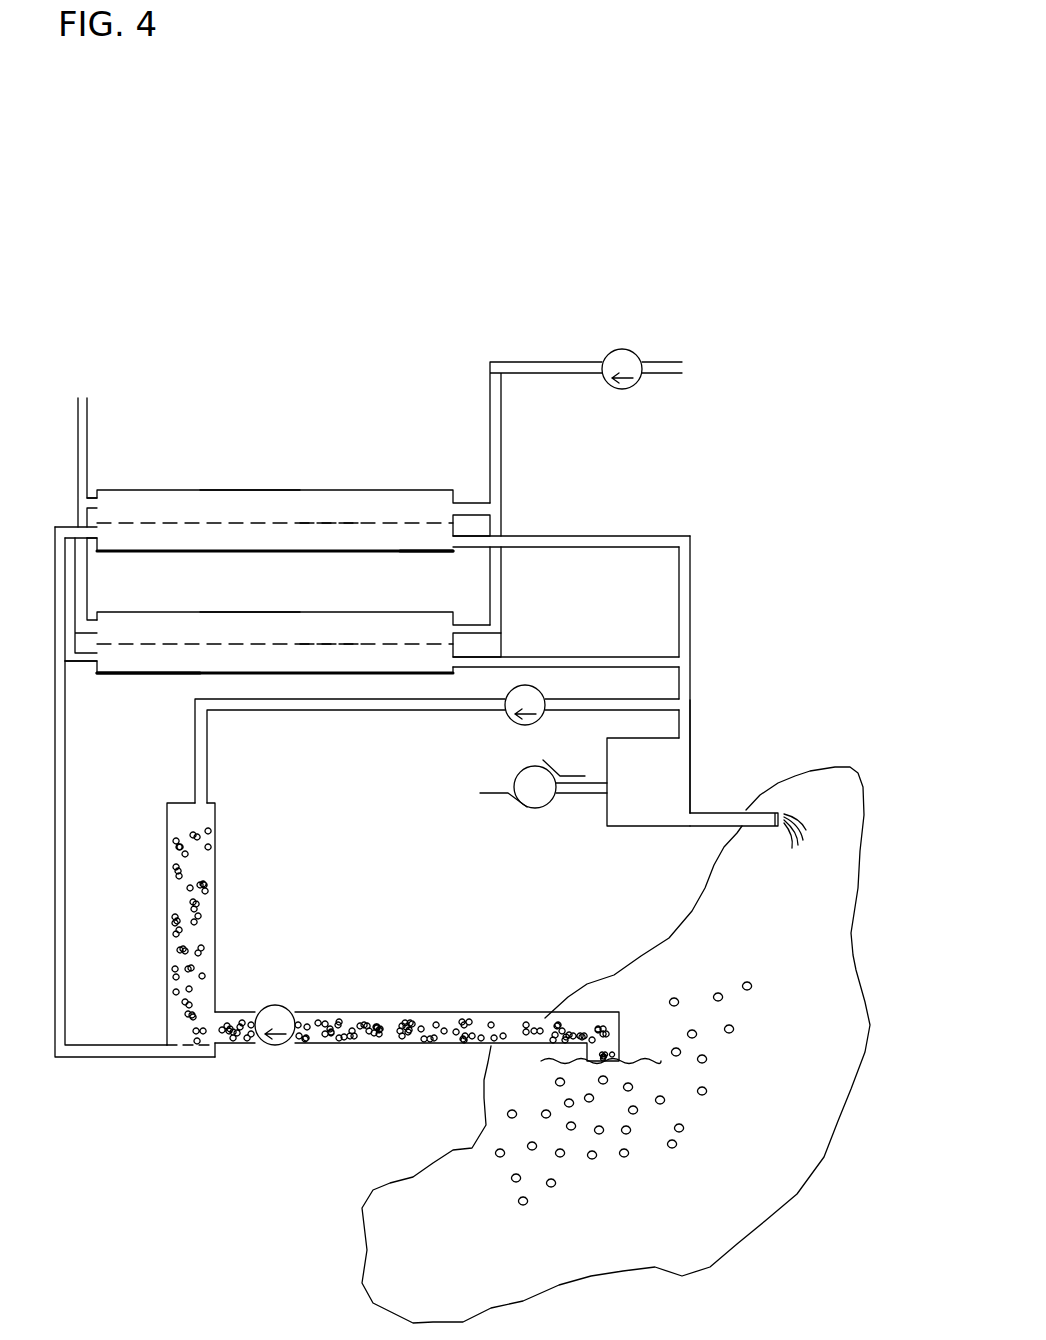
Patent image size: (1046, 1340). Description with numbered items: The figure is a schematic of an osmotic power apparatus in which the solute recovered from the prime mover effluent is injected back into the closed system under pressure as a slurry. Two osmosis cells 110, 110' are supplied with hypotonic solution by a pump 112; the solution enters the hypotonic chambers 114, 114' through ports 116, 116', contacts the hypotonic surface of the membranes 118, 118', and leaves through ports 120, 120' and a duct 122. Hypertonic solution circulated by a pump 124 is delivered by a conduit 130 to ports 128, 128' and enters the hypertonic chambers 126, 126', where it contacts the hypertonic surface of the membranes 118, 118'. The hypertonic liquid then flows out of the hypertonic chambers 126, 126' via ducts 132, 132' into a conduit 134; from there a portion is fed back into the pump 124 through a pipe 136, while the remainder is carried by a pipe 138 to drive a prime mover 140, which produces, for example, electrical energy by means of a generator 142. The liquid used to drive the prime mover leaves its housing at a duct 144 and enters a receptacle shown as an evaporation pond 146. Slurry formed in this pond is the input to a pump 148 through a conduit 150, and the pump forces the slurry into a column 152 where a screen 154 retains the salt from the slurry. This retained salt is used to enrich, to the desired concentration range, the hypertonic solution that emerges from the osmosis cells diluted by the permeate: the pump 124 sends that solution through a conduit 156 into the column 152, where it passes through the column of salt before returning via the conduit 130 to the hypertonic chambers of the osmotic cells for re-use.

The osmosis cell 110 is at (288, 499).
The osmosis cell 110' is at (277, 625).
The pump 112 is at (633, 350).
The hypotonic chamber 114 is at (268, 479).
The hypotonic chamber 114' is at (270, 603).
The port 116 is at (454, 493).
The port 116' is at (529, 637).
The membrane 118 is at (352, 487).
The membrane 118' is at (355, 610).
The port 120 is at (133, 487).
The port 120' is at (127, 595).
The duct 122 is at (91, 420).
The pump 124 is at (512, 720).
The hypertonic chamber 126 is at (431, 570).
The hypertonic chamber 126' is at (148, 702).
The port 128 is at (51, 509).
The port 128' is at (104, 686).
The conduit 130 is at (65, 835).
The duct 132 is at (571, 560).
The duct 132' is at (566, 677).
The conduit 134 is at (693, 588).
The pipe 136 is at (553, 712).
The pipe 138 is at (693, 724).
The prime mover 140 is at (627, 828).
The generator 142 is at (540, 808).
The duct 144 is at (714, 812).
The evaporation pond 146 is at (360, 1207).
The pump 148 is at (280, 1005).
The conduit 150 is at (479, 1012).
The column 152 is at (220, 832).
The screen 154 is at (198, 1058).
The conduit 156 is at (330, 712).